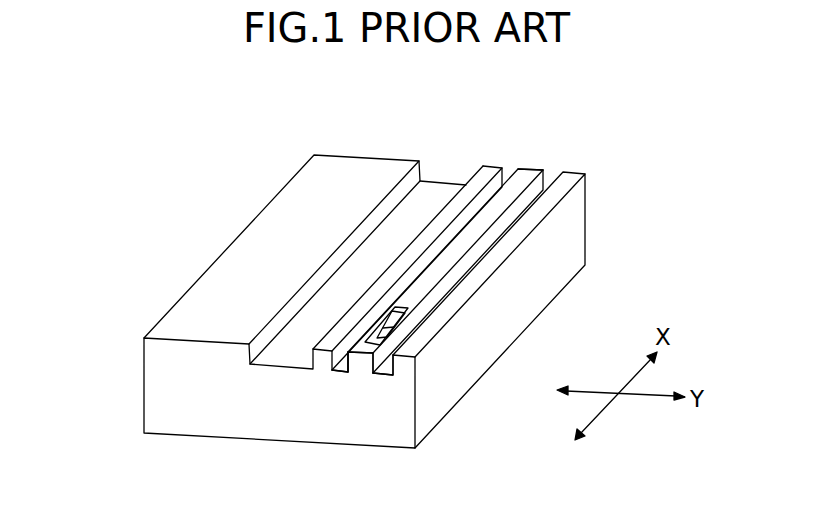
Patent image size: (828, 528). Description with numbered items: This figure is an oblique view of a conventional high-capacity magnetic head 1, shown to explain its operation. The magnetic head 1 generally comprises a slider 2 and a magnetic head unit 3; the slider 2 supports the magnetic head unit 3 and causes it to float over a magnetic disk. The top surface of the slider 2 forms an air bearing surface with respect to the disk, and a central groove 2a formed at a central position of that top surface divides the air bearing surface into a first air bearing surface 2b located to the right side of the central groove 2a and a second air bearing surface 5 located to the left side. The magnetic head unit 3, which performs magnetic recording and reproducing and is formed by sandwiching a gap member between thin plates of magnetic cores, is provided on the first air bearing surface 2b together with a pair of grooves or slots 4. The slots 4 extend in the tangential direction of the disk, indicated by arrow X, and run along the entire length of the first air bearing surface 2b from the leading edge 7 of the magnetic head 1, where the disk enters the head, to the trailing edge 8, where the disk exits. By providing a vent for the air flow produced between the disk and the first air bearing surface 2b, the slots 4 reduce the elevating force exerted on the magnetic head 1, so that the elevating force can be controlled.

The magnetic head 1 is at (243, 138).
The slider 2 is at (598, 234).
The central groove 2a is at (432, 192).
The first air bearing surface 2b is at (445, 263).
The magnetic head unit 3 is at (410, 306).
The slots 4 is at (338, 372).
The second air bearing surface 5 is at (254, 243).
The leading edge 7 is at (534, 170).
The trailing edge 8 is at (362, 358).